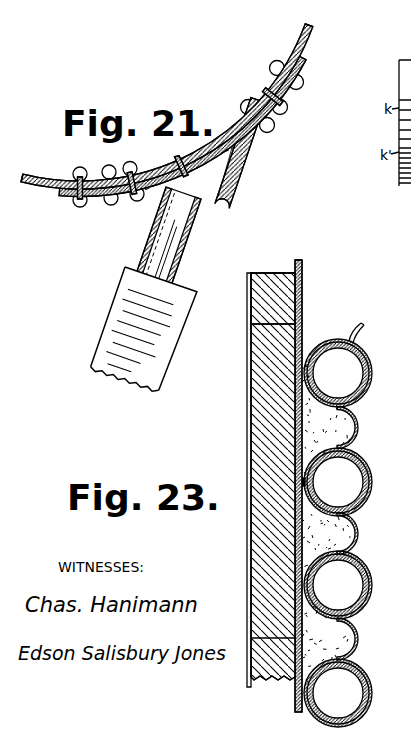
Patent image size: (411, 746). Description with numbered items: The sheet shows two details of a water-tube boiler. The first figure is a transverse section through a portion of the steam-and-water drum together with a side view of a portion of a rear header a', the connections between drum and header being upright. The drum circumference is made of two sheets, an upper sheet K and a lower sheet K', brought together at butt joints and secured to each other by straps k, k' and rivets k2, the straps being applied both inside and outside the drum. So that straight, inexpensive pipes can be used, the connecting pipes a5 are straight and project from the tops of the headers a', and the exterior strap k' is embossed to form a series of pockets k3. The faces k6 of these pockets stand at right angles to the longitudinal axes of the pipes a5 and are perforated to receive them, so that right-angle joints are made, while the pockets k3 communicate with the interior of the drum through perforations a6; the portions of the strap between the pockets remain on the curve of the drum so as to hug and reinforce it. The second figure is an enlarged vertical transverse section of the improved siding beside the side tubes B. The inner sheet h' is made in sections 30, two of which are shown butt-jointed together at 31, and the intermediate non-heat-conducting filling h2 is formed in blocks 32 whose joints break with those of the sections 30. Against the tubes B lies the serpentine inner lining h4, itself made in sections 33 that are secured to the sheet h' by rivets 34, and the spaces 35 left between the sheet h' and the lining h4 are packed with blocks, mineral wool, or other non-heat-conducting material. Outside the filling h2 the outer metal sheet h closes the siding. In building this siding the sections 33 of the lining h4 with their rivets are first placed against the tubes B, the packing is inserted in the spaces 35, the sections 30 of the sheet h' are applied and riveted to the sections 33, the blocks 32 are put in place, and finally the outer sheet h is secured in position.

In FIG. 21, the upper drum sheet K is at (173, 106).
In FIG. 21, the lower drum sheet K' is at (33, 192).
In FIG. 21, the track end A' is at (296, 31).
In FIG. 21, the strap k is at (179, 111).
In FIG. 21, the exterior strap k' is at (188, 156).
In FIG. 21, the rivets k2 is at (270, 87).
In FIG. 21, the pockets k3 is at (215, 182).
In FIG. 21, the pocket faces k6 is at (157, 201).
In FIG. 21, the perforations a6 is at (182, 168).
In FIG. 21, the connecting pipes a5 is at (163, 238).
In FIG. 21, the rear header a' is at (137, 330).
In FIG. 23, the outer sheet h is at (239, 474).
In FIG. 23, the intermediate filling h2 is at (272, 273).
In FIG. 23, the inner sheet h' is at (311, 262).
In FIG. 23, the serpentine inner lining h4 is at (362, 328).
In FIG. 23, the inner sheet sections 30 is at (303, 317).
In FIG. 23, the butt joint 31 is at (305, 483).
In FIG. 23, the filling blocks 32 is at (262, 305).
In FIG. 23, the lining sections 33 is at (358, 424).
In FIG. 23, the rivets 34 is at (300, 375).
In FIG. 23, the spaces 35 is at (355, 411).
In FIG. 23, the side tubes B is at (371, 362).